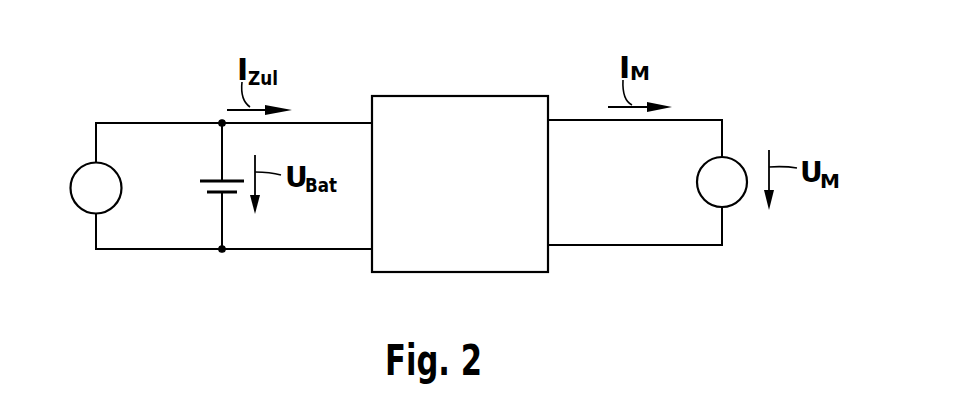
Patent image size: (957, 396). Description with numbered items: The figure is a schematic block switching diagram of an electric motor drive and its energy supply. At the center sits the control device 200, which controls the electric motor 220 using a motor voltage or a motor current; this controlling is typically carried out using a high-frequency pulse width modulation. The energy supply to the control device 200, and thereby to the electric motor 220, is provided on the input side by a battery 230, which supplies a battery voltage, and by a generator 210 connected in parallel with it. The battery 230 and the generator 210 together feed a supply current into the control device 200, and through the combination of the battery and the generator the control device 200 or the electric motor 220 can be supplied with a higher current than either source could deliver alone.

The generator 210 is at (78, 170).
The battery 230 is at (210, 179).
The control device 200 is at (433, 96).
The electric motor 220 is at (740, 162).